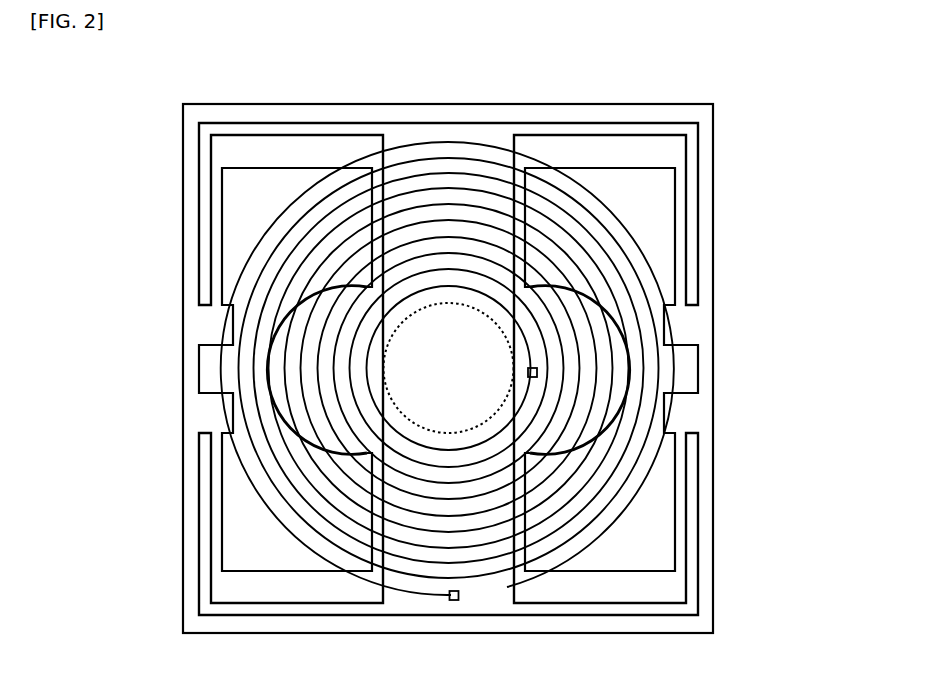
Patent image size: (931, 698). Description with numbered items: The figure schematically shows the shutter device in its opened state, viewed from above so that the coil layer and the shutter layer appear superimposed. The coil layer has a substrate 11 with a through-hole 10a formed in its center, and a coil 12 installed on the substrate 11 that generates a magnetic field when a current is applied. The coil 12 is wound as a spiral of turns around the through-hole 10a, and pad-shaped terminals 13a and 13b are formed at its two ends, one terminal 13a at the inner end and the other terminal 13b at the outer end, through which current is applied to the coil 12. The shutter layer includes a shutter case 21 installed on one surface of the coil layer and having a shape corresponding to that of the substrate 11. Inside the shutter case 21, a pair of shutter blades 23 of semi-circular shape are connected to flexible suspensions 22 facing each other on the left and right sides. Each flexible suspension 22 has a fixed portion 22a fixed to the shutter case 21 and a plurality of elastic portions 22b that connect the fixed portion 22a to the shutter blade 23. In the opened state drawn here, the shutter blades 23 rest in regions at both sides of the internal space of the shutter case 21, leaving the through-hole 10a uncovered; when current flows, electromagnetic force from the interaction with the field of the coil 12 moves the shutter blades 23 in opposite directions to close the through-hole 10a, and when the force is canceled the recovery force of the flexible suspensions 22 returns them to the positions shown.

The through-hole 10a is at (467, 303).
The substrate 11 is at (602, 615).
The coil 12 is at (622, 507).
The pad-shaped terminal 13a is at (537, 375).
The pad-shaped terminal 13b is at (453, 601).
The shutter case 21 is at (351, 617).
The flexible suspension 22 is at (365, 369).
The fixed portion 22a is at (87, 187).
The elastic portion 22b is at (205, 202).
The shutter blade 23 is at (300, 380).